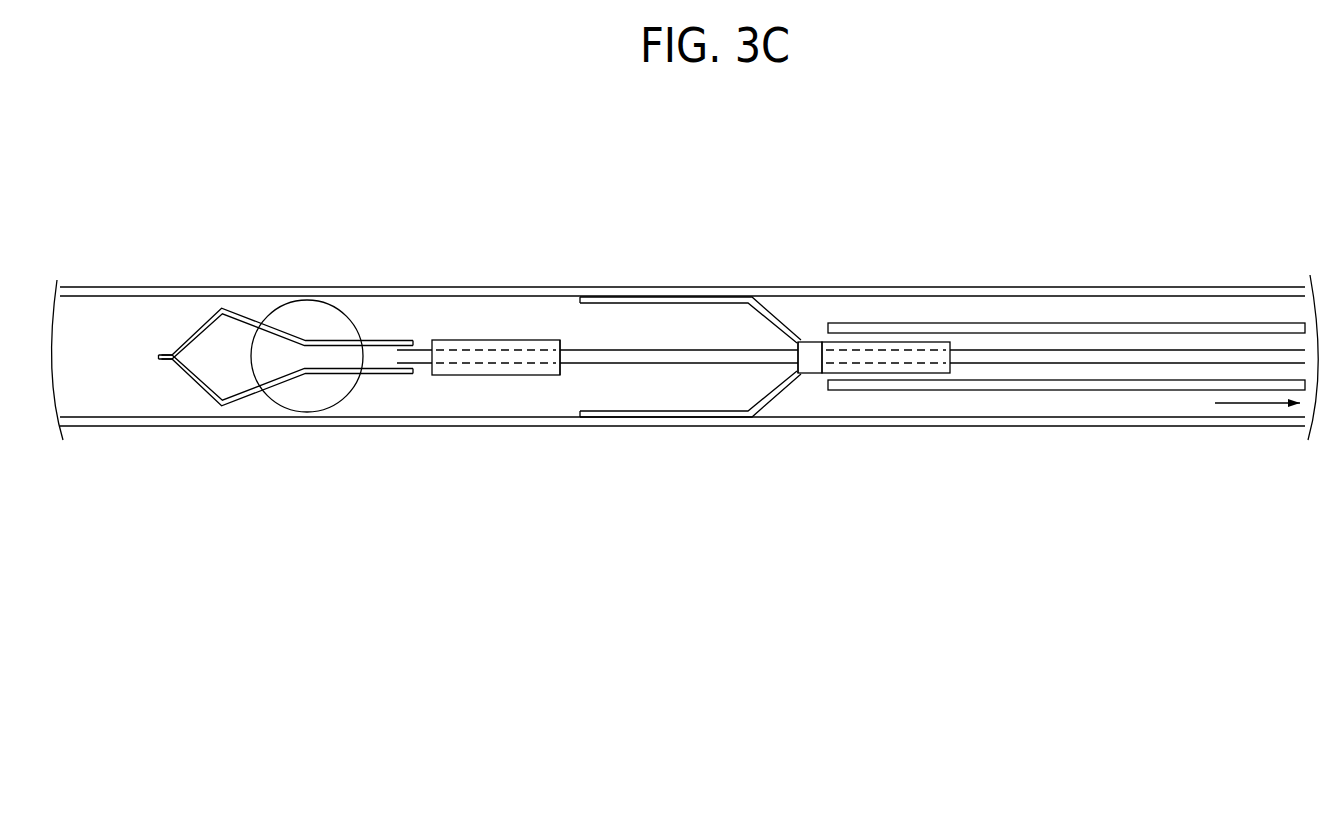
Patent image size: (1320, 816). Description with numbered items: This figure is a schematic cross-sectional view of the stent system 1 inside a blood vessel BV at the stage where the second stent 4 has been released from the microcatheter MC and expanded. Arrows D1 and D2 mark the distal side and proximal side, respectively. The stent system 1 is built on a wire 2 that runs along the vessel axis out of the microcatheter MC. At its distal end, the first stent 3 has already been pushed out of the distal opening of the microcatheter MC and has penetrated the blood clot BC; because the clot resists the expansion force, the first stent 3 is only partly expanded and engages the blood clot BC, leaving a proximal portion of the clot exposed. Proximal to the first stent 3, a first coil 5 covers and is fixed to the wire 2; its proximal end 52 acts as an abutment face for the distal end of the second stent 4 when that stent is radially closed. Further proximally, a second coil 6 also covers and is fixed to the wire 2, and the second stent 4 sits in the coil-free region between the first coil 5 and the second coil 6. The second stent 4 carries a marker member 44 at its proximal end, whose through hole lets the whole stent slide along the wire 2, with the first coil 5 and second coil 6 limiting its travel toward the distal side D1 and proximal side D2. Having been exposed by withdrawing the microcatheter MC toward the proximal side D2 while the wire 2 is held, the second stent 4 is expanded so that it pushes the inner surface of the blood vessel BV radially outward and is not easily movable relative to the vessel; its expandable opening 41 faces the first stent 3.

The stent system 1 is at (1021, 343).
The wire 2 is at (1051, 367).
The first stent 3 is at (188, 327).
The second stent 4 is at (783, 318).
The opening 41 is at (575, 396).
The marker member 44 is at (812, 373).
The first coil 5 is at (471, 337).
The proximal end 52 is at (565, 343).
The second coil 6 is at (893, 333).
The blood vessel BV is at (211, 284).
The blood clot BC is at (277, 413).
The microcatheter MC is at (1176, 320).
The distal side D1 is at (137, 605).
The proximal side D2 is at (1245, 605).